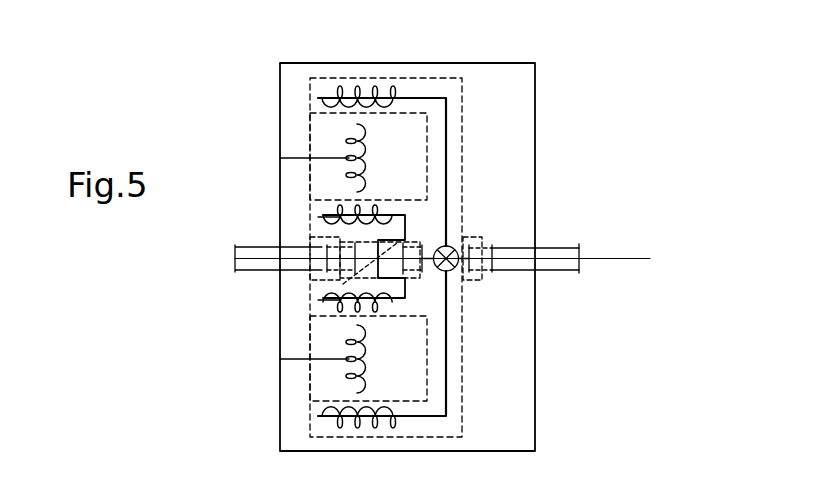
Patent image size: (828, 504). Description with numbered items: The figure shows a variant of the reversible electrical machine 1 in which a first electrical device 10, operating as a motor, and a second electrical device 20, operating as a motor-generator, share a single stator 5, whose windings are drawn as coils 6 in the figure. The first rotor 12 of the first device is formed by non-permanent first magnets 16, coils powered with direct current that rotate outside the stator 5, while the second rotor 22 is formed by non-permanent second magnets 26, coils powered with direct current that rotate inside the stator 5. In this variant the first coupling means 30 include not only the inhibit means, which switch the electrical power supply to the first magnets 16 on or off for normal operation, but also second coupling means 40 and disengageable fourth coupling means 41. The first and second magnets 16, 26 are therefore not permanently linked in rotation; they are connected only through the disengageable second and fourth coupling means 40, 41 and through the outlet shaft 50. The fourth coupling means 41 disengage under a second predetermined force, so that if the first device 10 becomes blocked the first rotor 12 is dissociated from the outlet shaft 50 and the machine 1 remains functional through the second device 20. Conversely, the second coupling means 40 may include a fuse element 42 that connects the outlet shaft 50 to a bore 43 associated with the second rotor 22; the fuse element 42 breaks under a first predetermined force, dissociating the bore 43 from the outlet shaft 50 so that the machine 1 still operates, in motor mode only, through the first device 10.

The reversible electrical machine 1 is at (212, 233).
The stator 5 is at (305, 158).
The stator coil 6 is at (366, 147).
The first electrical device 10 is at (296, 92).
The first rotor 12 is at (414, 98).
The non-permanent first magnets 16 is at (342, 92).
The second electrical device 20 is at (296, 312).
The second rotor 22 is at (407, 223).
The non-permanent second magnets 26 is at (318, 217).
The first coupling means 30 is at (463, 90).
The second coupling means 40 is at (375, 243).
The fourth coupling means 41 is at (449, 246).
The fuse element 42 is at (343, 284).
The bore 43 is at (403, 279).
The outlet shaft 50 is at (620, 258).